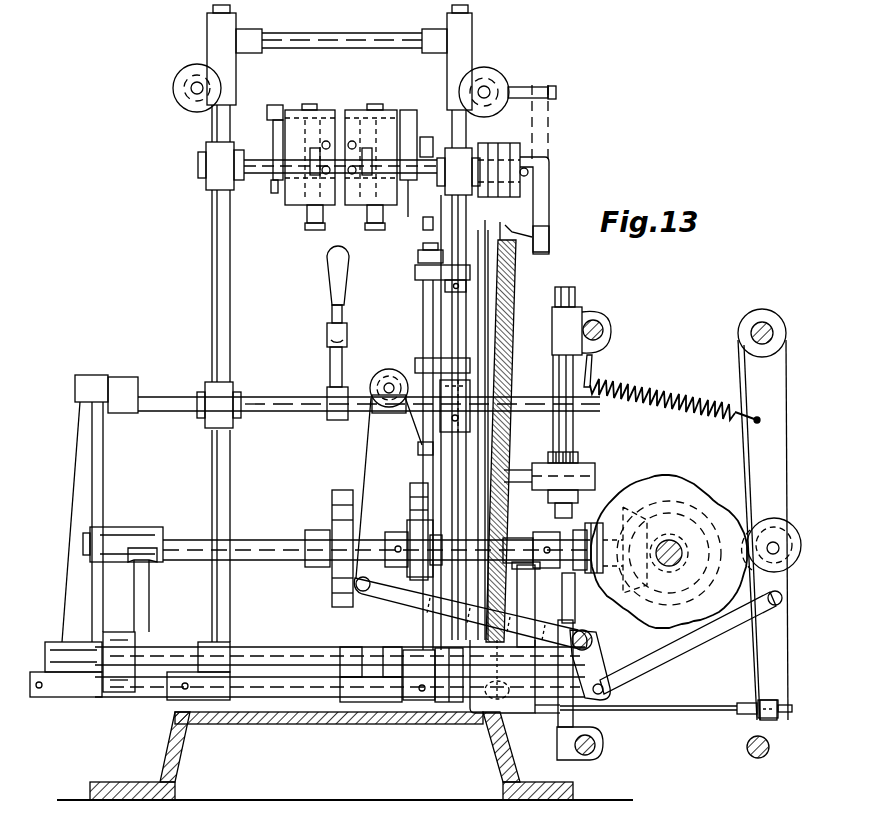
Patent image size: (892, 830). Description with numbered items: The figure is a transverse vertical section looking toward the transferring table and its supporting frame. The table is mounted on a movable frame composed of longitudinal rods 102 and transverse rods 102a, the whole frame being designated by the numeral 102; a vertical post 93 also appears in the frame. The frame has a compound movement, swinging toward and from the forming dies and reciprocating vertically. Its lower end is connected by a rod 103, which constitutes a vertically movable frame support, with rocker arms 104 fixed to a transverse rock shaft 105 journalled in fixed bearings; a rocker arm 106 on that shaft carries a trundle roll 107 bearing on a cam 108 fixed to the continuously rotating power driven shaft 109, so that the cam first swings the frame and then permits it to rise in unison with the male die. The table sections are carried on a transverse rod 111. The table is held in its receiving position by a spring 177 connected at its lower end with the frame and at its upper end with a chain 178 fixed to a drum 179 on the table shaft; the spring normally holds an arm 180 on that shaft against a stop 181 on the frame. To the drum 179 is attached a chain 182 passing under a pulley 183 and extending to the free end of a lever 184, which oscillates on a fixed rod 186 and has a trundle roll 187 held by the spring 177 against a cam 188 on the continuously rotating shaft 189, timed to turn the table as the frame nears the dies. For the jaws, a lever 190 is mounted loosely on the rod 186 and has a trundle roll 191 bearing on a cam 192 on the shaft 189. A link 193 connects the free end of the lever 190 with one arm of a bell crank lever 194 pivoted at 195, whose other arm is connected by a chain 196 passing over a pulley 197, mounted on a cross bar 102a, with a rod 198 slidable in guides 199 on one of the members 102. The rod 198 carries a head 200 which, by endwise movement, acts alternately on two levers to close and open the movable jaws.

The vertical shaft 93 is at (225, 485).
The table carrying frame 102 is at (222, 302).
The transverse rods or bars 102a is at (290, 416).
The rod 103 is at (268, 697).
The rocker arms 104 is at (70, 660).
The transverse rock shaft 105 is at (260, 656).
The rocker arm 106 is at (562, 591).
The trundle roll 107 is at (580, 527).
The cam 108 is at (594, 523).
The power driven shaft 109 is at (272, 560).
The transverse rod 111 is at (420, 178).
The spring 177 is at (507, 318).
The chain 178 is at (549, 250).
The drum 179 is at (518, 152).
The arm 180 is at (550, 118).
The stop 181 is at (556, 95).
The chain 182 is at (490, 262).
The pulley 183 is at (506, 700).
The lever 184 is at (760, 669).
The fixed rod 186 is at (752, 330).
The trundle roll 187 is at (752, 520).
The cam 188 is at (668, 540).
The continuously rotating shaft 189 is at (665, 545).
The lever 190 is at (760, 452).
The trundle roll 191 is at (756, 585).
The cam 192 is at (700, 605).
The link 193 is at (655, 665).
The bell crank lever 194 is at (594, 660).
The pivot 195 is at (593, 636).
The chain 196 is at (365, 456).
The pulley 197 is at (384, 370).
The rod 198 is at (428, 335).
The guides 199 is at (415, 270).
The head 200 is at (418, 252).